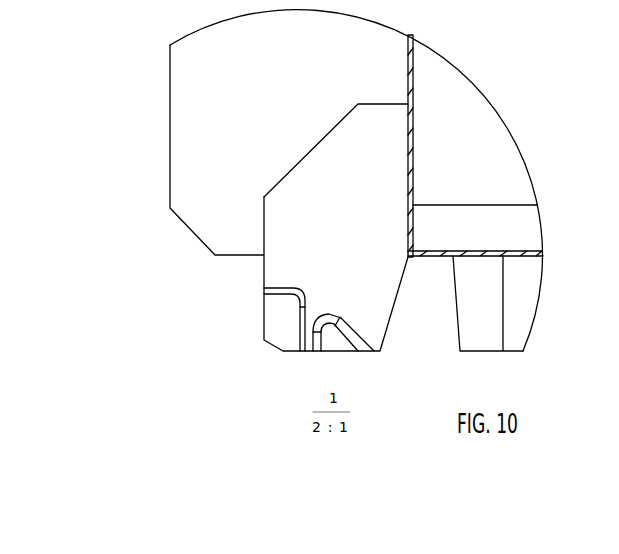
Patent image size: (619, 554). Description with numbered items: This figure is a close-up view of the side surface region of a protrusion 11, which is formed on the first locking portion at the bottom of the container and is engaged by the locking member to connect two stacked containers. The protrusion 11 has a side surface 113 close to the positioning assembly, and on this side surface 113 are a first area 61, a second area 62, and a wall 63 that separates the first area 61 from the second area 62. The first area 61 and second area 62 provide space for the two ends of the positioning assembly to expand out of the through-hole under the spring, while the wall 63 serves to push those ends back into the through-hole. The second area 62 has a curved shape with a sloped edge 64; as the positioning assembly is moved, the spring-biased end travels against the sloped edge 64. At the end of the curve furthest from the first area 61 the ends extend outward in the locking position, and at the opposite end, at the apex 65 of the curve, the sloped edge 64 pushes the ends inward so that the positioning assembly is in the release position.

The protrusion 11 is at (264, 197).
The side surface 113 is at (280, 220).
The first area 61 is at (279, 333).
The second area 62 is at (335, 343).
The wall 63 is at (312, 347).
The sloped edge 64 is at (346, 332).
The apex 65 is at (323, 316).